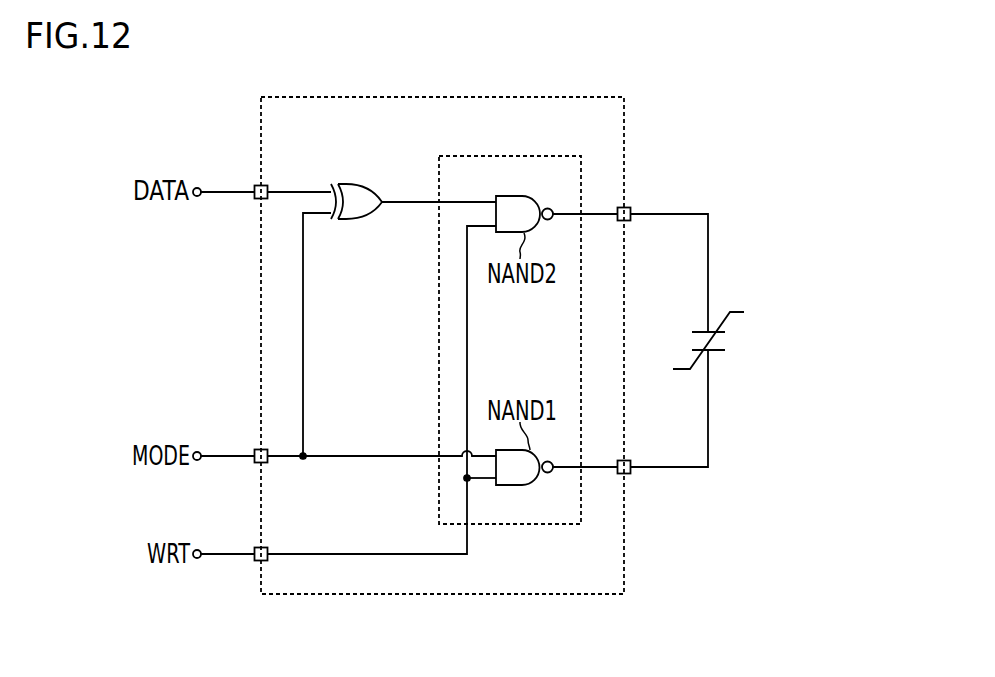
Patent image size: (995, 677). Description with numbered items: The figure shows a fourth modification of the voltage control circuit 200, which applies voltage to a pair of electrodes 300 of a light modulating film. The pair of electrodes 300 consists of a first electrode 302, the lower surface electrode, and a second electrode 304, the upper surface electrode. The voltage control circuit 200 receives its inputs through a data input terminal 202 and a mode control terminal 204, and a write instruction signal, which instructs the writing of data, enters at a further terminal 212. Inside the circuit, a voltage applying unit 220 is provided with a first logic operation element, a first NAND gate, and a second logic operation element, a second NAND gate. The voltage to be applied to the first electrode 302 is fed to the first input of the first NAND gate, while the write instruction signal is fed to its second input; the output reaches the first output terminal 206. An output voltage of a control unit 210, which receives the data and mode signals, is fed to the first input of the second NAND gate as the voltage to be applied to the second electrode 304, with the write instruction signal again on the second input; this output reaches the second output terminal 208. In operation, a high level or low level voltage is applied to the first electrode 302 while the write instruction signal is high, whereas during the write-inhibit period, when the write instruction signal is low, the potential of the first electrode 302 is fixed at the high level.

The voltage control circuit 200 is at (626, 134).
The voltage applying unit 220 is at (510, 155).
The data input terminal 202 is at (255, 200).
The mode control terminal 204 is at (255, 464).
The write input terminal 212 is at (255, 562).
The second output terminal 208 is at (630, 207).
The first output terminal 206 is at (631, 475).
The control unit 210 is at (361, 220).
The pair of electrodes 300 is at (778, 347).
The second electrode 304 is at (730, 329).
The first electrode 302 is at (730, 347).